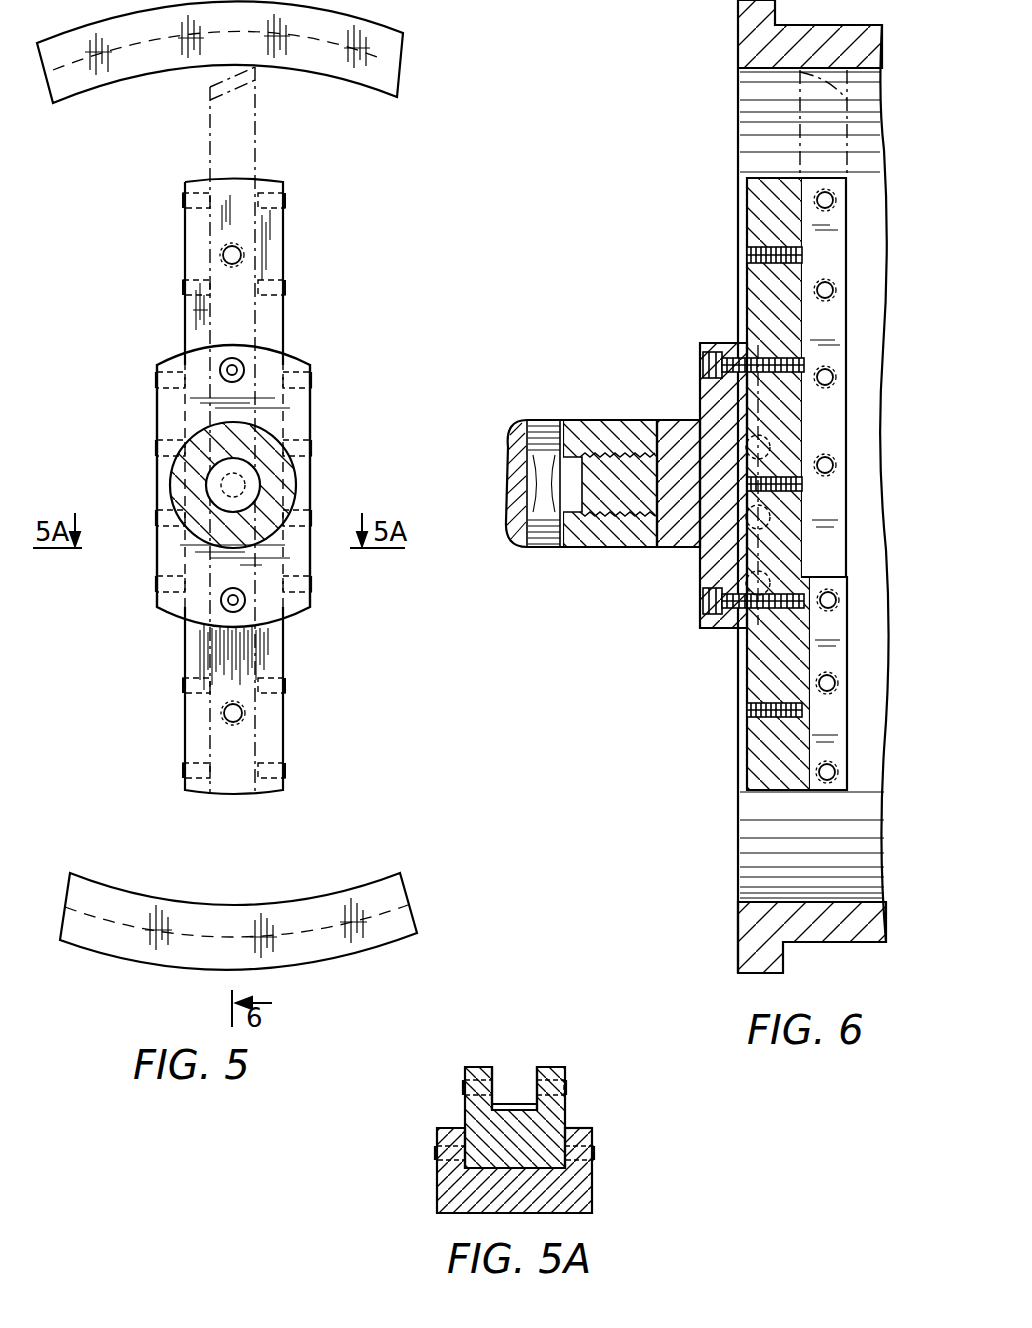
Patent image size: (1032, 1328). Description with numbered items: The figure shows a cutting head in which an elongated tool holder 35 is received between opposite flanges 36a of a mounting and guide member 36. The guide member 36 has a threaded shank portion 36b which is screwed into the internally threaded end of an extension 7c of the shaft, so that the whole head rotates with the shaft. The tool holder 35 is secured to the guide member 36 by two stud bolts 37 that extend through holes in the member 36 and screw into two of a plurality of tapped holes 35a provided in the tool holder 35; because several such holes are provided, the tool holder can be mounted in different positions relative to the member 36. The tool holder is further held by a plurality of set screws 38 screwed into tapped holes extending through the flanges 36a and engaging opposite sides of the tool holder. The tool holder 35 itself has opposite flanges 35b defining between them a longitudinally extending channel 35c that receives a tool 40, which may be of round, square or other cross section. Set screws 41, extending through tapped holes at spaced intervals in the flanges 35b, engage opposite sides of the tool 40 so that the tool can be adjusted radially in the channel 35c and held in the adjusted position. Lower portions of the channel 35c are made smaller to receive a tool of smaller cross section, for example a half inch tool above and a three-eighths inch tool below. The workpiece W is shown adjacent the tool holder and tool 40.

In FIG. 5, the shaft extension 7c is at (172, 478).
In FIG. 6, the shaft extension 7c is at (541, 420).
In FIG. 5, the tool holder 35 is at (275, 232).
In FIG. 6, the tool holder 35 is at (752, 207).
In FIG. 5A, the tool holder 35 is at (465, 1112).
In FIG. 5, the tapped holes 35a is at (245, 716).
In FIG. 6, the tapped holes 35a is at (750, 710).
In FIG. 5, the flanges 35b is at (275, 562).
In FIG. 6, the flanges 35b is at (835, 350).
In FIG. 5A, the flanges 35b is at (478, 1067).
In FIG. 6, the channel 35c is at (838, 708).
In FIG. 5A, the channel 35c is at (500, 1078).
In FIG. 6, the mounting and guide member 36 is at (700, 345).
In FIG. 5A, the mounting and guide member 36 is at (437, 1183).
In FIG. 5A, the flanges 36a is at (580, 1128).
In FIG. 5, the threaded shank portion 36b is at (252, 492).
In FIG. 6, the threaded shank portion 36b is at (628, 437).
In FIG. 5, the stud bolts 37 is at (226, 362).
In FIG. 6, the stud bolts 37 is at (722, 342).
In FIG. 5, the set screws 38 is at (312, 448).
In FIG. 6, the set screws 38 is at (700, 572).
In FIG. 5A, the set screws 38 is at (437, 1152).
In FIG. 5, the tool 40 is at (255, 125).
In FIG. 6, the tool 40 is at (848, 295).
In FIG. 5, the set screws 41 is at (183, 198).
In FIG. 6, the set screws 41 is at (833, 205).
In FIG. 5A, the set screws 41 is at (568, 1088).
In FIG. 5, the workpiece W is at (397, 90).
In FIG. 6, the workpiece W is at (738, 905).